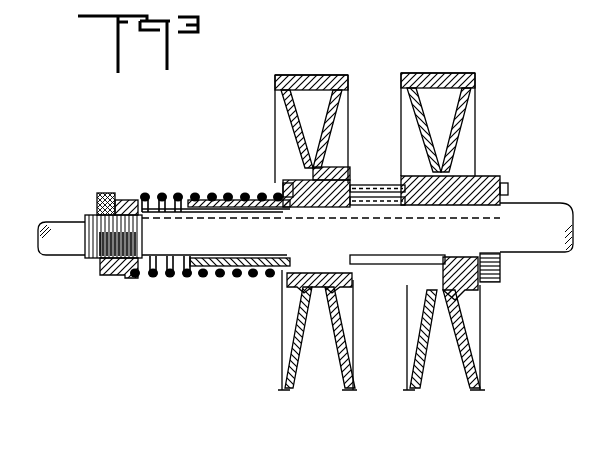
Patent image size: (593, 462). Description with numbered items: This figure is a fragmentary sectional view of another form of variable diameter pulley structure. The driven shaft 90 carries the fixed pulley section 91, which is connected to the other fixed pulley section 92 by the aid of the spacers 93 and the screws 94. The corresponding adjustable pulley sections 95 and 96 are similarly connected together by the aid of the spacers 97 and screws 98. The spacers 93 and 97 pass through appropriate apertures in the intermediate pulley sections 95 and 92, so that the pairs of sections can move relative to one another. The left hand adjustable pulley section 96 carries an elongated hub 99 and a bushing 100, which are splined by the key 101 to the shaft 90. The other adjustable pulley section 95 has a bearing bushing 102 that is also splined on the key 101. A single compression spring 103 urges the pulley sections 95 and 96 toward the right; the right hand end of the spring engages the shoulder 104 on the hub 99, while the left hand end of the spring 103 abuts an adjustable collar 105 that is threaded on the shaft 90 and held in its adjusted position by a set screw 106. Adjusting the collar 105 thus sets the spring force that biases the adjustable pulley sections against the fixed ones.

The driven shaft 90 is at (545, 204).
The fixed pulley section 91 is at (463, 131).
The fixed pulley section 92 is at (328, 74).
The spacers 93 is at (365, 184).
The screws 94 is at (504, 186).
The adjustable pulley section 95 is at (428, 98).
The adjustable pulley section 96 is at (276, 100).
The spacers 97 is at (381, 275).
The screws 98 is at (447, 290).
The elongated hub 99 is at (212, 274).
The bushing 100 is at (188, 200).
The key 101 is at (145, 197).
The bearing bushing 102 is at (498, 268).
The compression spring 103 is at (167, 278).
The shoulder 104 is at (286, 184).
The adjustable collar 105 is at (100, 280).
The set screw 106 is at (107, 193).